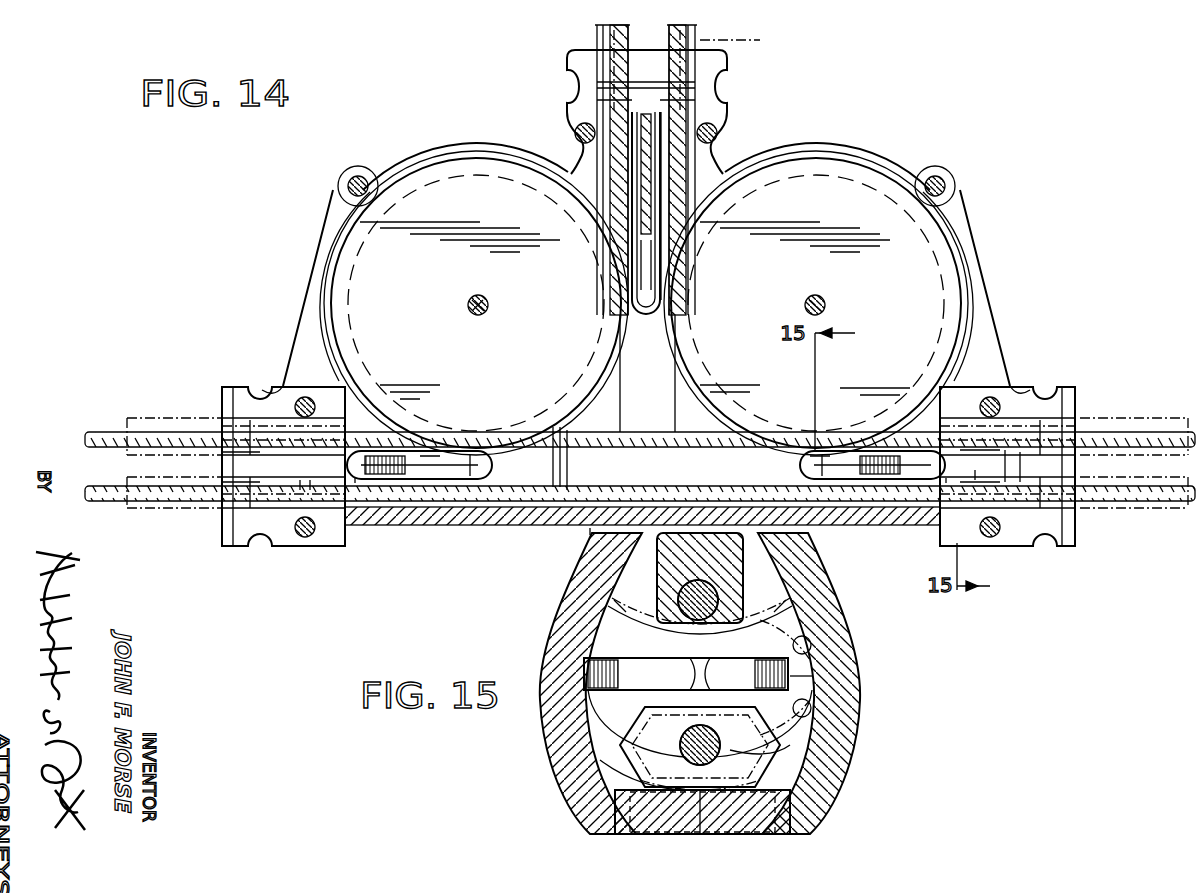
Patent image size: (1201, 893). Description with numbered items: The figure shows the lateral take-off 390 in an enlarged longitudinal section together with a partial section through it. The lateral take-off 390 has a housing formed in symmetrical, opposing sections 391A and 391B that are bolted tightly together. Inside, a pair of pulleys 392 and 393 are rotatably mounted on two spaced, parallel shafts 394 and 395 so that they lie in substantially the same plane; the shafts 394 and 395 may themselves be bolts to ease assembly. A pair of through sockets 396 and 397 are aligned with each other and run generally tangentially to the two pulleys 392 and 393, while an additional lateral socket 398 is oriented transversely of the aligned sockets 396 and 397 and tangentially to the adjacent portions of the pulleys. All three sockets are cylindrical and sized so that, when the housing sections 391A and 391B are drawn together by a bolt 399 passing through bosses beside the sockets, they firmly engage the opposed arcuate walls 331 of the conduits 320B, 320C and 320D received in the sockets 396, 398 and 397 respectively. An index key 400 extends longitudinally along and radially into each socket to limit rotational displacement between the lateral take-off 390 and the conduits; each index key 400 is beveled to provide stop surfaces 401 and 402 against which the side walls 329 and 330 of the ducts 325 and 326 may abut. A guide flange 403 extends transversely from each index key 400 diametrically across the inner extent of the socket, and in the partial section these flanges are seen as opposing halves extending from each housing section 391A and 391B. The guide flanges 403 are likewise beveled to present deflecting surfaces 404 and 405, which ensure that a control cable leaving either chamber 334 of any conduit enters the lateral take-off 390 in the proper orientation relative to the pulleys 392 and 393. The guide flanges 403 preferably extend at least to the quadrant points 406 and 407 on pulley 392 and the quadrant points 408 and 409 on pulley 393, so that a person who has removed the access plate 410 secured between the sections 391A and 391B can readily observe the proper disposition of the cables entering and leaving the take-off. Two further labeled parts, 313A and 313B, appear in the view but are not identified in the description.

In FIG. 14, the upper push-pull rod 313A is at (106, 432).
In FIG. 15, the upper push-pull rod 313A is at (720, 600).
In FIG. 14, the lower push-pull rod 313B is at (606, 488).
In FIG. 15, the lower push-pull rod 313B is at (690, 747).
In FIG. 14, the conduit 320B is at (176, 424).
In FIG. 14, the conduit 320C is at (700, 40).
In FIG. 14, the conduit 320D is at (1121, 518).
In FIG. 15, the duct 325 is at (590, 617).
In FIG. 15, the duct 326 is at (790, 750).
In FIG. 15, the side wall 329 is at (640, 748).
In FIG. 15, the side wall 330 is at (778, 620).
In FIG. 14, the arcuate wall 331 is at (603, 43).
In FIG. 15, the arcuate wall 331 is at (642, 770).
In FIG. 14, the chamber 334 is at (632, 75).
In FIG. 15, the chamber 334 is at (612, 632).
In FIG. 14, the lateral take-off 390 is at (322, 212).
In FIG. 15, the lateral take-off 390 is at (544, 591).
In FIG. 14, the housing section 391A is at (592, 546).
In FIG. 15, the housing section 391A is at (588, 683).
In FIG. 14, the housing section 391B is at (648, 373).
In FIG. 15, the housing section 391B is at (810, 546).
In FIG. 14, the pulley 392 is at (362, 280).
In FIG. 14, the pulley 393 is at (915, 268).
In FIG. 15, the pulley 393 is at (776, 560).
In FIG. 14, the shaft 394 is at (478, 318).
In FIG. 14, the shaft 395 is at (812, 294).
In FIG. 14, the through socket 396 is at (236, 467).
In FIG. 14, the through socket 397 is at (1027, 473).
In FIG. 15, the through socket 397 is at (592, 728).
In FIG. 14, the lateral socket 398 is at (655, 100).
In FIG. 14, the bolt 399 is at (578, 128).
In FIG. 14, the index key 400 is at (632, 158).
In FIG. 15, the index key 400 is at (796, 684).
In FIG. 14, the stop surface 401 is at (1000, 447).
In FIG. 15, the stop surface 401 is at (811, 645).
In FIG. 14, the stop surface 402 is at (1013, 490).
In FIG. 15, the stop surface 402 is at (811, 710).
In FIG. 14, the guide flange 403 is at (425, 468).
In FIG. 15, the guide flange 403 is at (588, 662).
In FIG. 14, the deflecting surface 404 is at (355, 452).
In FIG. 14, the deflecting surface 405 is at (355, 485).
In FIG. 14, the quadrant point 406 is at (480, 447).
In FIG. 14, the quadrant point 407 is at (622, 302).
In FIG. 14, the quadrant point 408 is at (815, 450).
In FIG. 14, the quadrant point 409 is at (680, 305).
In FIG. 14, the access plate 410 is at (515, 526).
In FIG. 15, the access plate 410 is at (800, 805).